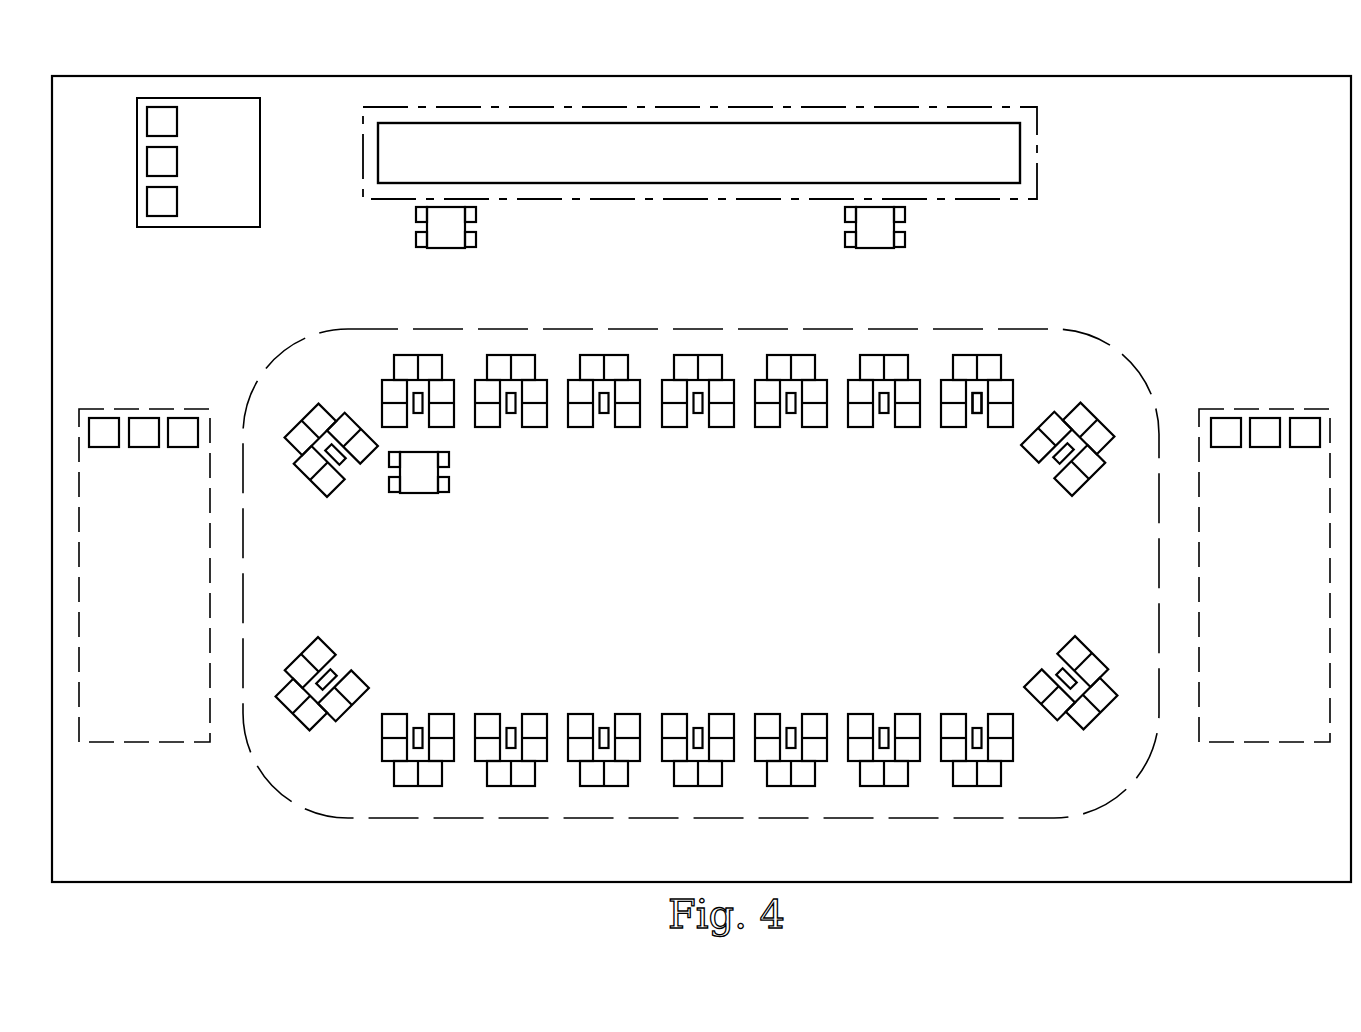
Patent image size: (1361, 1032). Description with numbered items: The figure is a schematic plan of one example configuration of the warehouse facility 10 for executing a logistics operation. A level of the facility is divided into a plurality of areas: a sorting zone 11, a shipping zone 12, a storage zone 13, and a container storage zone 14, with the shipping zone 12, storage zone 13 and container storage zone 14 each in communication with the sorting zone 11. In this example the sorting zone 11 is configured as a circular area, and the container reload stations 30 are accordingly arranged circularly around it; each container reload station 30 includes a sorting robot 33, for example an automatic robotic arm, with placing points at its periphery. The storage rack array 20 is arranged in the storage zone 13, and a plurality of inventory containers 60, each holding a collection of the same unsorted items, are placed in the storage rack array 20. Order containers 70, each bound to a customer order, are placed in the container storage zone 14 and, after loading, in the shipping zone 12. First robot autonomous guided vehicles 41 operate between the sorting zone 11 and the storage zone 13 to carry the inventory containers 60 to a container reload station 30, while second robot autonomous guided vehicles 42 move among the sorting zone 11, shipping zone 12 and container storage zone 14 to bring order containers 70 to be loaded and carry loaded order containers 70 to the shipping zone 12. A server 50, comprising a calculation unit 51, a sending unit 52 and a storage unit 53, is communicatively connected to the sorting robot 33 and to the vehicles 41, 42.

The warehouse facility 10 is at (1254, 70).
The sorting zone 11 is at (1086, 800).
The shipping zone 12 is at (1273, 735).
The storage zone 13 is at (945, 113).
The container storage zone 14 is at (137, 742).
The storage rack array 20 is at (1010, 160).
The container reload station 30 is at (372, 352).
The sorting robot 33 is at (976, 413).
The first robot autonomous guided vehicle 41 is at (447, 247).
The second robot autonomous guided vehicle 42 is at (420, 490).
The server 50 is at (209, 162).
The calculation unit 51 is at (152, 121).
The sending unit 52 is at (152, 164).
The storage unit 53 is at (152, 205).
The inventory container 60 is at (591, 365).
The order container 70 is at (103, 423).